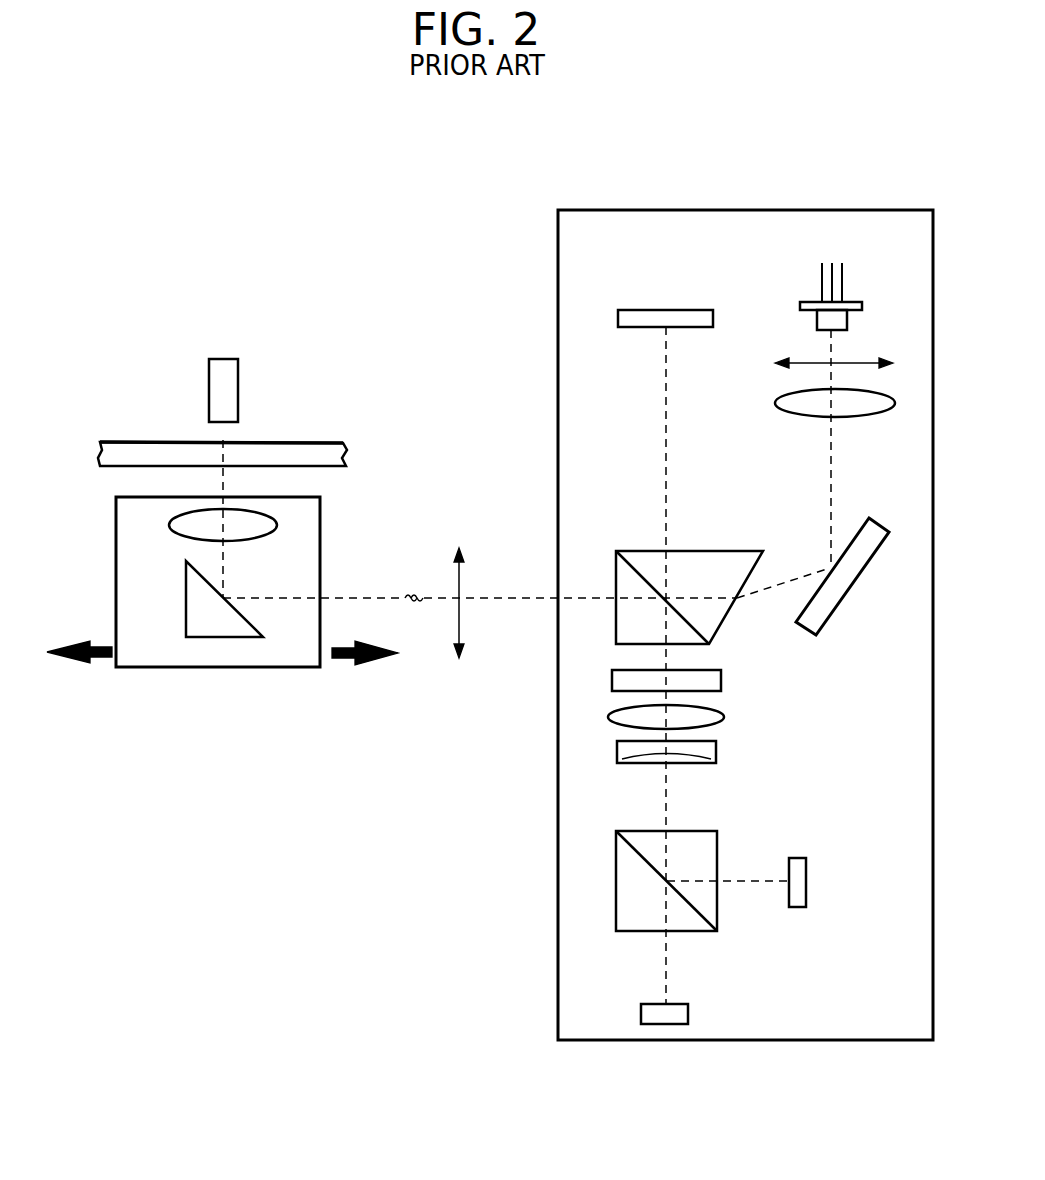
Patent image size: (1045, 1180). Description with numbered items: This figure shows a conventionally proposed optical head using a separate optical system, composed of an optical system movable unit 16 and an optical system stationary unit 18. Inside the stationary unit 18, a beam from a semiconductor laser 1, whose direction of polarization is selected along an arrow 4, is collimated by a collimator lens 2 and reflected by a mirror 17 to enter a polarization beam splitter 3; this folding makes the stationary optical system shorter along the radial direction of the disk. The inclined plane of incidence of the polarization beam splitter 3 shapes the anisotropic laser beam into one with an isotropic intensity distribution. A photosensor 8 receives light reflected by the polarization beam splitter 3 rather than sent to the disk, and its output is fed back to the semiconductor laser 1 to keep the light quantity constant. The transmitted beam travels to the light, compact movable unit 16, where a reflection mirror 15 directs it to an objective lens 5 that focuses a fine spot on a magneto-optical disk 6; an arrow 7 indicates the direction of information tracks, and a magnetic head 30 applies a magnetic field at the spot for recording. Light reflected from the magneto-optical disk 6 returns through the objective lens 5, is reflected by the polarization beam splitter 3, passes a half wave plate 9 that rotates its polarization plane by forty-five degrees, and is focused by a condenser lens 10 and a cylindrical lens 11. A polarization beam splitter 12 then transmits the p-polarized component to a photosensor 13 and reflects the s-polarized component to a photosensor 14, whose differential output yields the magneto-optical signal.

The semiconductor laser 1 is at (862, 318).
The collimator lens 2 is at (800, 414).
The polarization beam splitter 3 is at (729, 551).
The arrow 4 is at (810, 362).
The objective lens 5 is at (253, 540).
The magneto-optical disk 6 is at (295, 442).
The arrow 7 is at (462, 627).
The photosensor 8 is at (697, 310).
The half wave plate 9 is at (721, 673).
The condenser lens 10 is at (723, 710).
The cylindrical lens 11 is at (716, 747).
The polarization beam splitter 12 is at (616, 868).
The photosensor 13 is at (680, 1003).
The photosensor 14 is at (806, 897).
The reflection mirror 15 is at (186, 602).
The optical system movable unit 16 is at (273, 667).
The mirror 17 is at (830, 622).
The optical system stationary unit 18 is at (850, 1042).
The magnetic head 30 is at (230, 359).